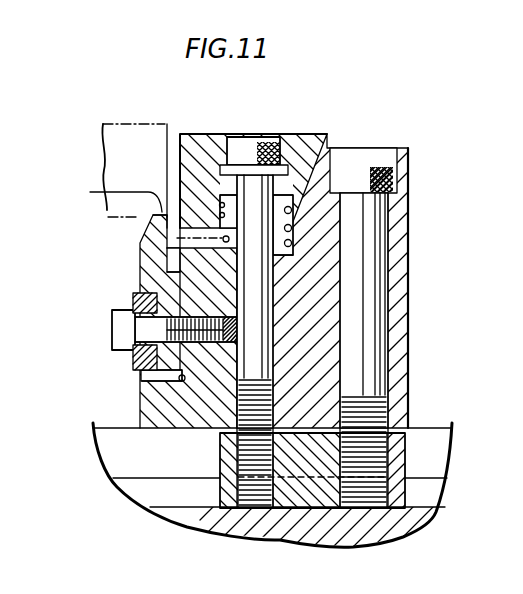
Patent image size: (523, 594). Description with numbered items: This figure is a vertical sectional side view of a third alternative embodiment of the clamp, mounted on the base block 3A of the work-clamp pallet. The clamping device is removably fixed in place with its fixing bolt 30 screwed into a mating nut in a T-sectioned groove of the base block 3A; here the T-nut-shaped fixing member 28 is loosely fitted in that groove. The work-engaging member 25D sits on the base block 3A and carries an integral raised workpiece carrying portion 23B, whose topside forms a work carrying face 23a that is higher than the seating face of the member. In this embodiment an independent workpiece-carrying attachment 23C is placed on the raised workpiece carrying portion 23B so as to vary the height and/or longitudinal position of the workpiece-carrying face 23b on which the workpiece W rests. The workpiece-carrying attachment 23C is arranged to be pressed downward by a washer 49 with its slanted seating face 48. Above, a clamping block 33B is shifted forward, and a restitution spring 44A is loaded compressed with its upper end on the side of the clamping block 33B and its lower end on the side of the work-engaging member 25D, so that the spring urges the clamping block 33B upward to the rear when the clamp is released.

The workpiece W is at (100, 150).
The workpiece-carrying face 23b is at (152, 212).
The workpiece-carrying attachment 23C is at (152, 270).
The work carrying face 23a is at (150, 372).
The raised workpiece carrying portion 23B is at (143, 428).
The slanted seating face 48 is at (133, 300).
The washer 49 is at (133, 356).
The clamping block 33B is at (310, 145).
The restitution spring 44A is at (292, 228).
The work-engaging member 25D is at (330, 257).
The fixing bolt 30 is at (360, 287).
The fixing member 28 is at (313, 490).
The base block 3A is at (362, 530).